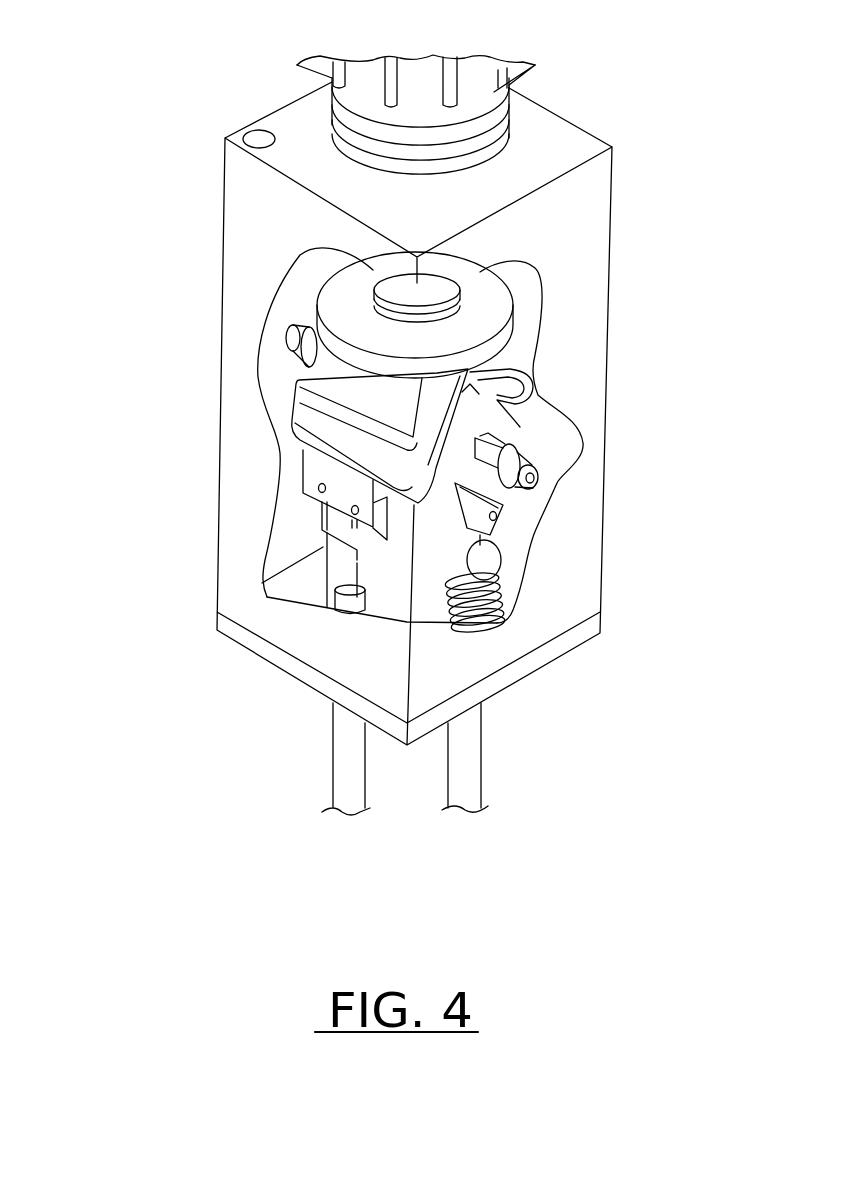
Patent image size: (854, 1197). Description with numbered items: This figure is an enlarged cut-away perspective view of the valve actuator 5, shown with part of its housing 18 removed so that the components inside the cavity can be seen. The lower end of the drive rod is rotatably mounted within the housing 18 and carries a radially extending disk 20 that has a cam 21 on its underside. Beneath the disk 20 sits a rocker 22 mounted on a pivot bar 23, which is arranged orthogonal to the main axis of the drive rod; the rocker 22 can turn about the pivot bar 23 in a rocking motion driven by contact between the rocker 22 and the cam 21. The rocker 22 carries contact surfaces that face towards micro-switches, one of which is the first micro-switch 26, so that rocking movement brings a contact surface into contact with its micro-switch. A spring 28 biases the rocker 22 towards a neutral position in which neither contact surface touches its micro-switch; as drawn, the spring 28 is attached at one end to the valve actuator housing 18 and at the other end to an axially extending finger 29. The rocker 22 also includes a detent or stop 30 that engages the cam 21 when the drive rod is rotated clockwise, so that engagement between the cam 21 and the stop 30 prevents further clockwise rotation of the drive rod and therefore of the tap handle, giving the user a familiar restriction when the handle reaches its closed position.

The valve actuator 5 is at (157, 115).
The housing 18 is at (222, 262).
The disk 20 is at (488, 308).
The cam 21 is at (490, 382).
The rocker 22 is at (307, 405).
The pivot bar 23 is at (530, 480).
The first micro-switch 26 is at (333, 498).
The spring 28 is at (503, 600).
The axially extending finger 29 is at (500, 512).
The stop 30 is at (470, 390).